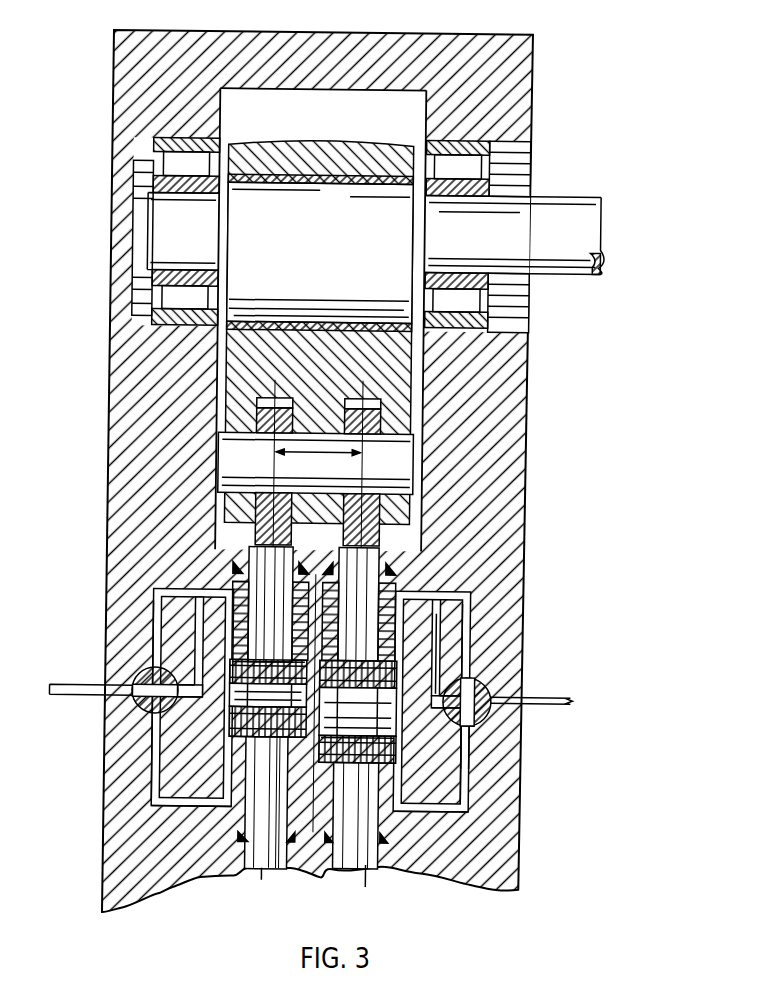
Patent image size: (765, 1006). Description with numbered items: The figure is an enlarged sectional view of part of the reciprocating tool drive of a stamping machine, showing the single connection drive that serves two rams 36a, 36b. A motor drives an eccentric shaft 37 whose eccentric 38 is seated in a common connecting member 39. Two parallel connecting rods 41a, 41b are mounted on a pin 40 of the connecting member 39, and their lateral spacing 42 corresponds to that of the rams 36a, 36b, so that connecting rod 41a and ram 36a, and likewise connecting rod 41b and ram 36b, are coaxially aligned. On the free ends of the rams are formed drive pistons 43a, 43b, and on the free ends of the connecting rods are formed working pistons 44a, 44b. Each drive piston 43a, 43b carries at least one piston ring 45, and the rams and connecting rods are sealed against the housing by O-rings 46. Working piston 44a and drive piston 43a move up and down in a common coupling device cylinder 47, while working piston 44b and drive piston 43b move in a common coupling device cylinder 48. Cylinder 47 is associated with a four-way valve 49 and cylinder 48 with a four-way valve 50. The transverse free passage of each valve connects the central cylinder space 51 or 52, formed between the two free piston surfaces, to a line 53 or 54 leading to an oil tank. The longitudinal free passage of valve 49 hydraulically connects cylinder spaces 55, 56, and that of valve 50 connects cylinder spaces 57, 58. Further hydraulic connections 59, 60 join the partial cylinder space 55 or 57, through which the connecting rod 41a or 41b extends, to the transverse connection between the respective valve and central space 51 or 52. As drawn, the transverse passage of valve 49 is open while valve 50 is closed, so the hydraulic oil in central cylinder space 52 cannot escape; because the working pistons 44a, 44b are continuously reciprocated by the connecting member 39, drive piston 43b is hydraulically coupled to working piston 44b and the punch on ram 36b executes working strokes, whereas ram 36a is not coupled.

The ram 36a is at (271, 866).
The ram 36b is at (372, 872).
The eccentric shaft 37 is at (566, 214).
The eccentric 38 is at (430, 345).
The connecting member 39 is at (238, 374).
The pin 40 is at (398, 484).
The connecting rod 41a is at (238, 708).
The connecting rod 41b is at (419, 708).
The lateral spacing 42 is at (322, 441).
The drive piston 43a is at (247, 758).
The drive piston 43b is at (399, 832).
The working piston 44a is at (172, 652).
The working piston 44b is at (385, 745).
The piston ring 45 is at (238, 726).
The O-ring 46 is at (403, 566).
The coupling device cylinder 47 is at (284, 860).
The coupling device cylinder 48 is at (334, 832).
The four-way valve 49 is at (130, 720).
The four-way valve 50 is at (502, 714).
The central cylinder space 51 is at (277, 745).
The central cylinder space 52 is at (352, 770).
The line 53 is at (100, 685).
The line 54 is at (540, 705).
The cylinder space 55 is at (240, 566).
The cylinder space 56 is at (236, 836).
The cylinder space 57 is at (430, 640).
The cylinder space 58 is at (408, 796).
The hydraulic connection 59 is at (165, 620).
The hydraulic connection 60 is at (452, 668).